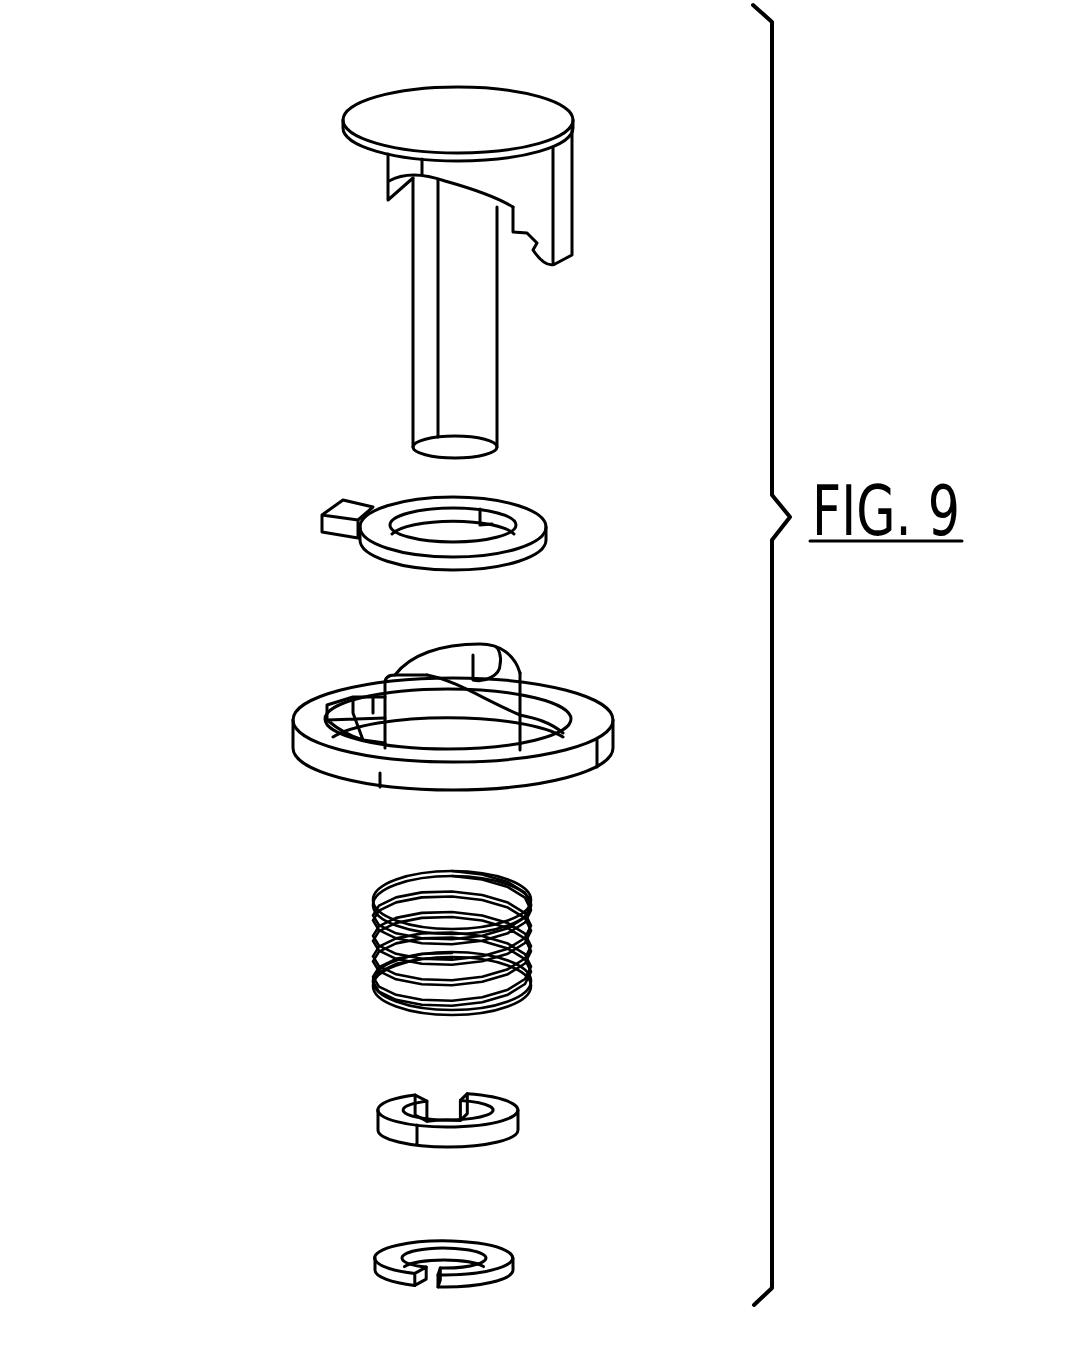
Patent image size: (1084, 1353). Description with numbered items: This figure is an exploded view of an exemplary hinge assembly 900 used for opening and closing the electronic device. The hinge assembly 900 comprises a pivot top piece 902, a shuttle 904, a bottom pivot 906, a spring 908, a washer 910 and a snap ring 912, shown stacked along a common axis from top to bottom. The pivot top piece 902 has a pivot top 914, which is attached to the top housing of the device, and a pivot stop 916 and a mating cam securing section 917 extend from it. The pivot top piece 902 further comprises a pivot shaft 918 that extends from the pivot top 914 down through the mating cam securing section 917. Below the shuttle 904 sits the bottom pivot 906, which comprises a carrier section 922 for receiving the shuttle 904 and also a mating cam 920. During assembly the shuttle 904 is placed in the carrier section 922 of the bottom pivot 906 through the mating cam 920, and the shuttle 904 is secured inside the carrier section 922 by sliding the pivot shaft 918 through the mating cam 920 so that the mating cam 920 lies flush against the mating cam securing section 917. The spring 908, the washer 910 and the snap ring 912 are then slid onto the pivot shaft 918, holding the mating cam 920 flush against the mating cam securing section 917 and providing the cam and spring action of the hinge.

The hinge assembly 900 is at (146, 509).
The pivot top piece 902 is at (497, 303).
The shuttle 904 is at (545, 542).
The bottom pivot 906 is at (587, 712).
The spring 908 is at (527, 937).
The washer 910 is at (518, 1130).
The snap ring 912 is at (478, 1240).
The pivot top 914 is at (397, 112).
The pivot stop 916 is at (536, 218).
The mating cam securing section 917 is at (477, 188).
The pivot shaft 918 is at (457, 347).
The mating cam 920 is at (487, 650).
The carrier section 922 is at (360, 735).